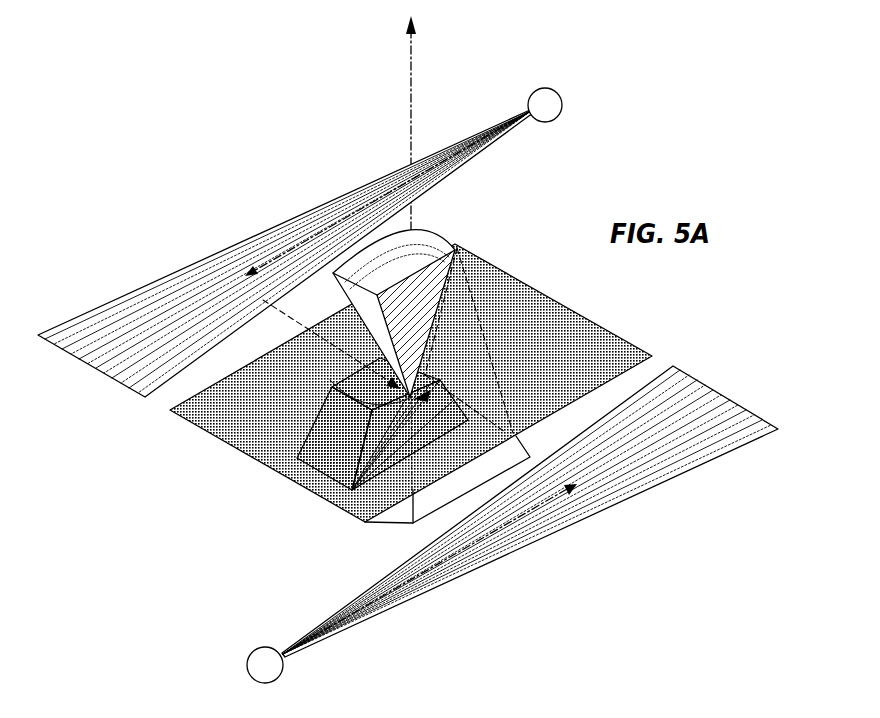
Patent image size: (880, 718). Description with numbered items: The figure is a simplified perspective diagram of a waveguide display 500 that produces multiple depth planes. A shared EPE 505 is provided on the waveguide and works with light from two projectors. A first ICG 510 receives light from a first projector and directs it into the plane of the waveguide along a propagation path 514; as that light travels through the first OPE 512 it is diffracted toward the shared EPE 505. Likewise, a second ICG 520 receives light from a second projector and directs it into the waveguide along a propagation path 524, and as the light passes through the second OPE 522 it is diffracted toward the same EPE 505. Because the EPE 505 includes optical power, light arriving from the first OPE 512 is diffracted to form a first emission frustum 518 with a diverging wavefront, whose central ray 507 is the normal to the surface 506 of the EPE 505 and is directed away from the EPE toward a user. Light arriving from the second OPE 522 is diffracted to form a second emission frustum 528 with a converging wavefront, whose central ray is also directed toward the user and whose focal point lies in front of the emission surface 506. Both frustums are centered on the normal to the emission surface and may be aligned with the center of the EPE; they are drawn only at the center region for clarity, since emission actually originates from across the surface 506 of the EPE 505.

The waveguide display 500 is at (188, 76).
The shared EPE 505 is at (247, 457).
The surface of EPE 506 is at (325, 485).
The central ray 507 is at (415, 73).
The first ICG 510 is at (548, 90).
The first OPE 512 is at (165, 276).
The propagation path 514 is at (302, 244).
The first emission frustum 518 is at (390, 277).
The second ICG 520 is at (262, 649).
The second OPE 522 is at (636, 484).
The propagation path 524 is at (497, 560).
The second emission frustum 528 is at (324, 386).